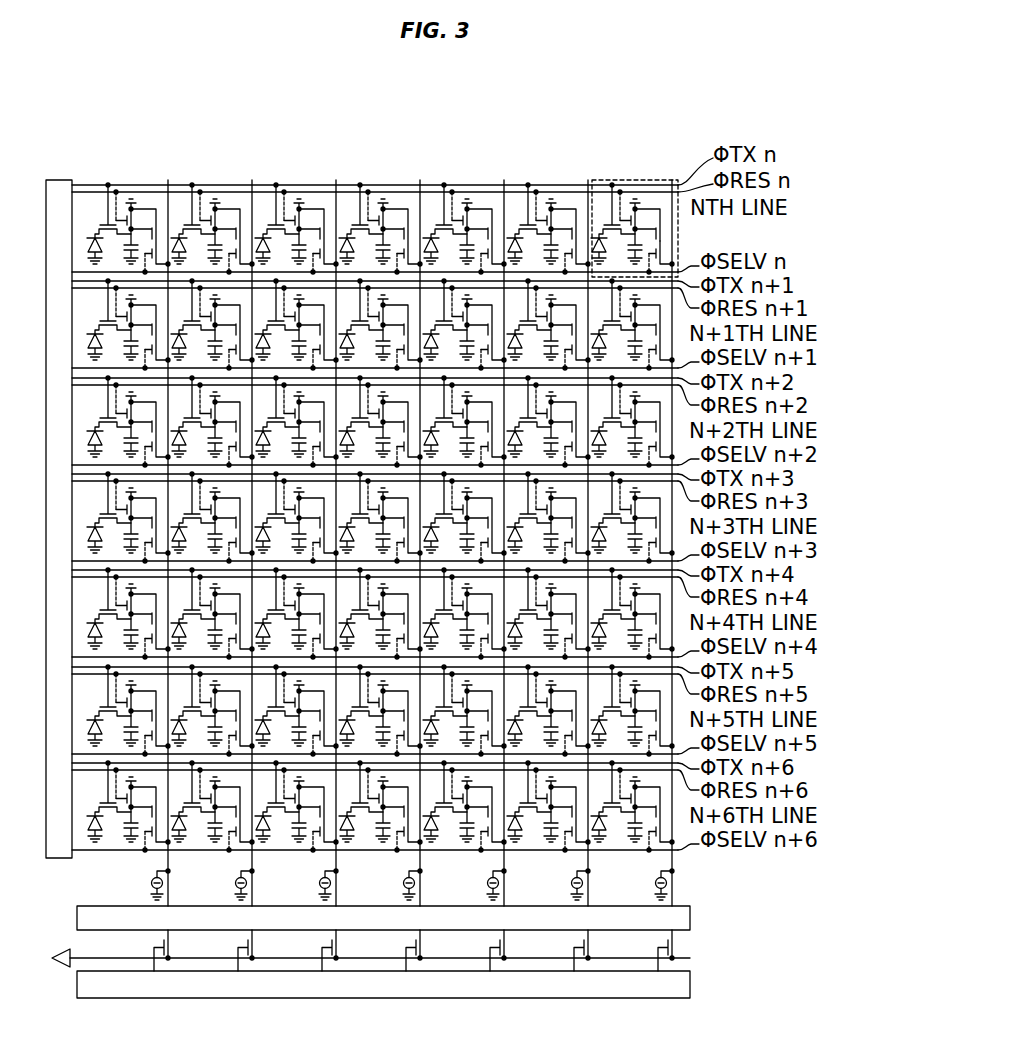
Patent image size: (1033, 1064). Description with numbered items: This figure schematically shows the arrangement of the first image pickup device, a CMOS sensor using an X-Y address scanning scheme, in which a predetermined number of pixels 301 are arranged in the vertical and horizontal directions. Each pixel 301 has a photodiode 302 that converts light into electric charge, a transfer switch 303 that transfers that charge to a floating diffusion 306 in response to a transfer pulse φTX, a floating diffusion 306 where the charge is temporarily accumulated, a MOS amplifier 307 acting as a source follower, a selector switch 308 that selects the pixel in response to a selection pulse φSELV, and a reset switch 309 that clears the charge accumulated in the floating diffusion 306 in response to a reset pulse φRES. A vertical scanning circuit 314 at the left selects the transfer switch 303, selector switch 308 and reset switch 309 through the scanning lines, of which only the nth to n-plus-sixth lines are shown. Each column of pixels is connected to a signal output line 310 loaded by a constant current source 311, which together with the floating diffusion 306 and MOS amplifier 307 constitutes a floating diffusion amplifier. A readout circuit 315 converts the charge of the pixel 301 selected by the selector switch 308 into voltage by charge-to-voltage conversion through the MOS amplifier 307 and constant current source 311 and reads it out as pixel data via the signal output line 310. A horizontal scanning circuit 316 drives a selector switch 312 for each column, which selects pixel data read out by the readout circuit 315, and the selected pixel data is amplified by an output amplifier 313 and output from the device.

The pixel 301 is at (676, 181).
The photodiode 302 is at (597, 235).
The transfer switch 303 is at (608, 222).
The floating diffusion 306 is at (637, 238).
The MOS amplifier 307 is at (661, 238).
The selector switch 308 is at (664, 252).
The reset switch 309 is at (632, 216).
The signal output line 310 is at (676, 226).
The constant current source 311 is at (669, 880).
The selector switch 312 is at (676, 944).
The output amplifier 313 is at (62, 970).
The vertical scanning circuit 314 is at (62, 180).
The readout circuit 315 is at (690, 915).
The horizontal scanning circuit 316 is at (690, 978).